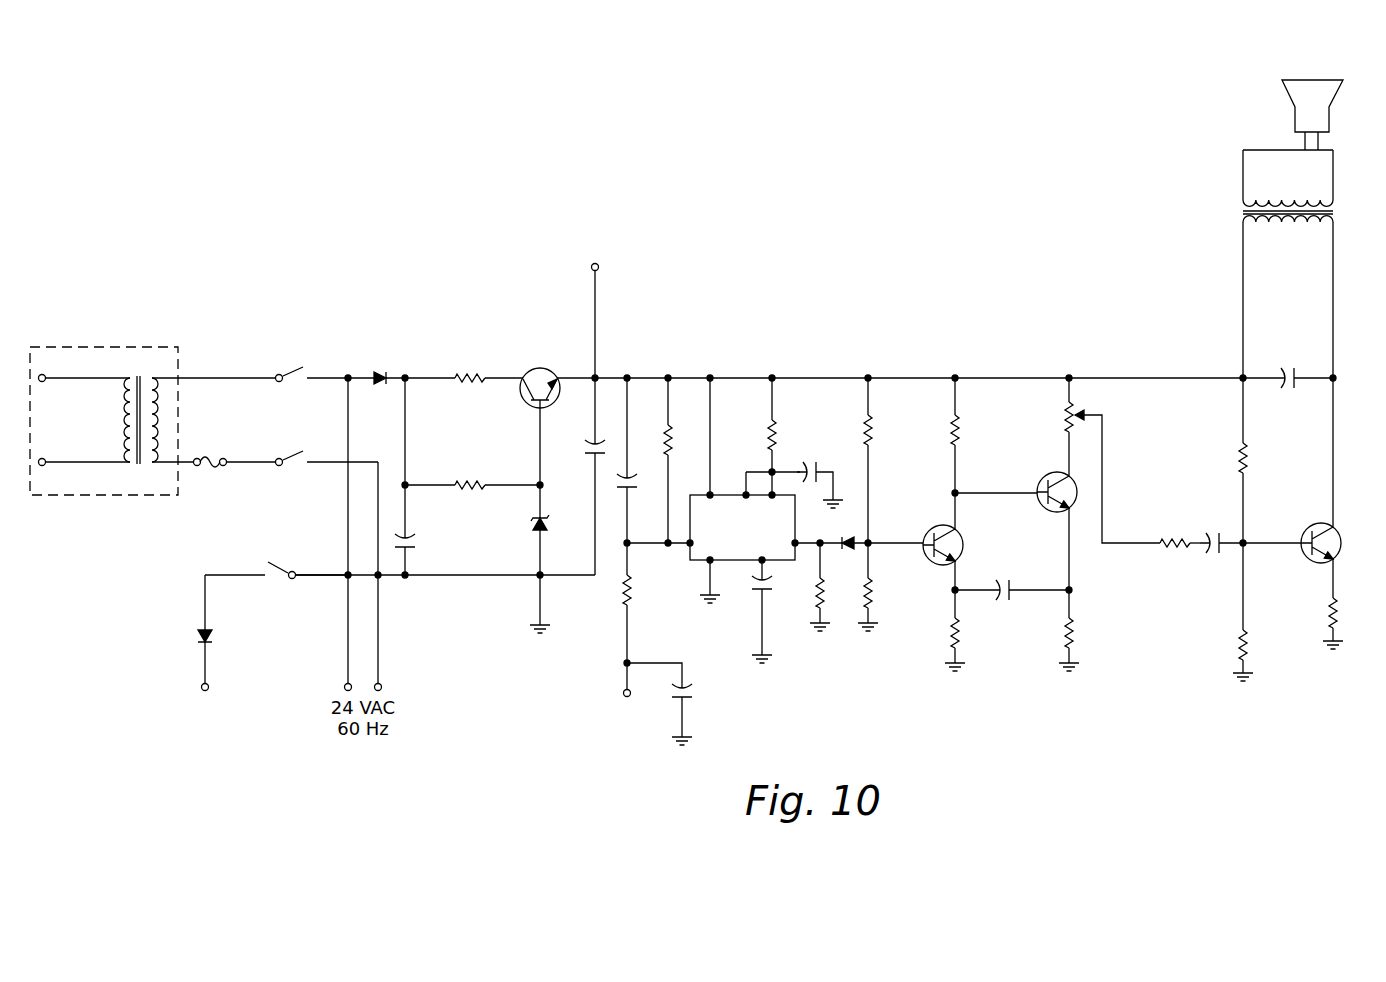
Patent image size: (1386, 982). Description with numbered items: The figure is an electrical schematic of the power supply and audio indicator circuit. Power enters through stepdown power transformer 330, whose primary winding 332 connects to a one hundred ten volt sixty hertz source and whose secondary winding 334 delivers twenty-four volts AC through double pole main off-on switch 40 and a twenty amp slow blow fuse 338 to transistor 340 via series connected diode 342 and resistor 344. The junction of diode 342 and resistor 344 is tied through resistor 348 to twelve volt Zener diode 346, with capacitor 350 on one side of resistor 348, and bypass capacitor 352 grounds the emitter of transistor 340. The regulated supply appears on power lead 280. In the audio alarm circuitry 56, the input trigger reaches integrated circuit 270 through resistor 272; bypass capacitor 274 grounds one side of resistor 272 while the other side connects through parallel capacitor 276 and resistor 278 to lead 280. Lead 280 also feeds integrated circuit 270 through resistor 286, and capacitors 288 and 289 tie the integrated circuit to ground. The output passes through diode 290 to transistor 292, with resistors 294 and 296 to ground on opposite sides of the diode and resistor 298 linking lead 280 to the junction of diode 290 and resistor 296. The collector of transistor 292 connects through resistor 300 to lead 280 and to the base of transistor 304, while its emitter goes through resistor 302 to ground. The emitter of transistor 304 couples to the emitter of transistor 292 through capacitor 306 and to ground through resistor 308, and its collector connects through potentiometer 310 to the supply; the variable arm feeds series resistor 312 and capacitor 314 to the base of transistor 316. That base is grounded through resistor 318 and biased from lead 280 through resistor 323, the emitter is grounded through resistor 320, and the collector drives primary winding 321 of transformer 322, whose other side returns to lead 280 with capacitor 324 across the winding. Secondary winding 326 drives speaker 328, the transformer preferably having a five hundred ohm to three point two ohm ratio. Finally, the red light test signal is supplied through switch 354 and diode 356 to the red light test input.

The double pole main off-on switch 40 is at (303, 428).
The audio alarm circuitry 56 is at (843, 319).
The integrated circuit 270 is at (760, 538).
The resistor 272 is at (630, 592).
The bypass capacitor 274 is at (692, 690).
The capacitor 276 is at (628, 478).
The resistor 278 is at (670, 440).
The power lead 280 is at (655, 376).
The resistor 286 is at (775, 433).
The capacitor 288 is at (812, 465).
The capacitor 289 is at (764, 588).
The diode 290 is at (850, 541).
The transistor 292 is at (965, 544).
The resistor 294 is at (822, 600).
The resistor 296 is at (872, 596).
The resistor 298 is at (872, 434).
The resistor 300 is at (958, 433).
The resistor 302 is at (961, 633).
The transistor 304 is at (1054, 473).
The capacitor 306 is at (1008, 582).
The resistor 308 is at (1075, 630).
The potentiometer 310 is at (1076, 412).
The resistor 312 is at (1180, 540).
The capacitor 314 is at (1214, 534).
The transistor 316 is at (1306, 530).
The resistor 318 is at (1249, 645).
The resistor 320 is at (1336, 608).
The primary winding 321 is at (1237, 214).
The transformer 322 is at (1239, 224).
The resistor 323 is at (1250, 455).
The capacitor 324 is at (1288, 365).
The secondary winding 326 is at (1240, 190).
The speaker 328 is at (1288, 95).
The power transformer 330 is at (152, 402).
The primary winding 332 is at (132, 470).
The secondary winding 334 is at (154, 470).
The fuse 338 is at (218, 466).
The transistor 340 is at (542, 366).
The diode 342 is at (381, 370).
The resistor 344 is at (471, 372).
The Zener diode 346 is at (536, 525).
The resistor 348 is at (472, 480).
The capacitor 350 is at (412, 542).
The bypass capacitor 352 is at (589, 452).
The switch 354 is at (294, 566).
The diode 356 is at (200, 635).